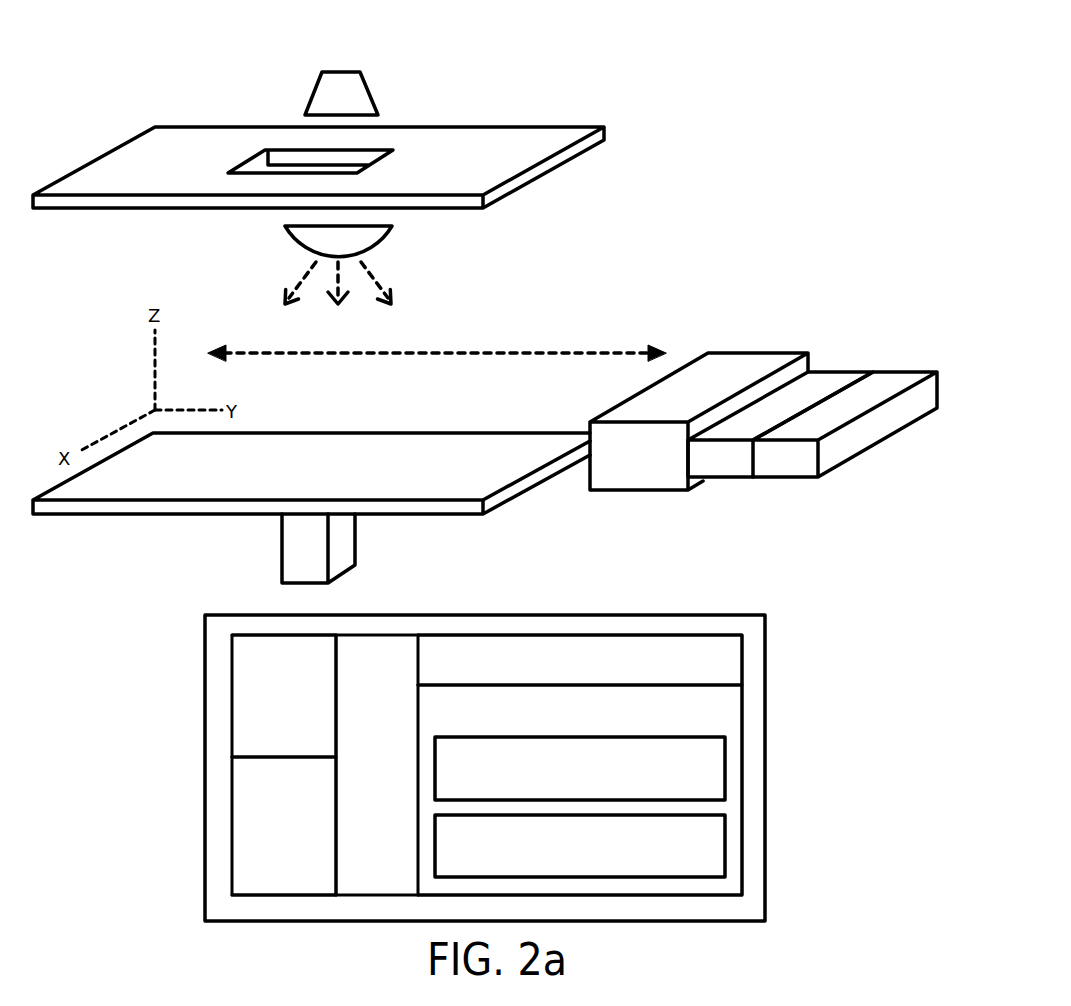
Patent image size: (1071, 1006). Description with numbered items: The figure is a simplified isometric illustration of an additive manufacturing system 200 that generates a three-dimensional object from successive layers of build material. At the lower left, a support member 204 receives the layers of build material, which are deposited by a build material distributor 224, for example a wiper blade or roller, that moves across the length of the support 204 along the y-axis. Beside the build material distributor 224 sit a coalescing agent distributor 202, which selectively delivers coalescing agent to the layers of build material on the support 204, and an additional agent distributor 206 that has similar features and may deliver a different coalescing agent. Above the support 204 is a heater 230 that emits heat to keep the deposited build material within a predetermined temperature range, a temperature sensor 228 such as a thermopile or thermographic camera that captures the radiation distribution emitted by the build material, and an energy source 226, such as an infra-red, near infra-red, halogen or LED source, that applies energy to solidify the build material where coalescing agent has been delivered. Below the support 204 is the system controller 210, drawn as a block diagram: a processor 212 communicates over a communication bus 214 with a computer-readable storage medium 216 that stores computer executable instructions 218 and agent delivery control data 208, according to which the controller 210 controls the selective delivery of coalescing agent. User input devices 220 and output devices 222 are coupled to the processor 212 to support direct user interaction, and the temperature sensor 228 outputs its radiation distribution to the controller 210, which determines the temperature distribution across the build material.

The additive manufacturing system 200 is at (768, 52).
The coalescing agent distributor 202 is at (880, 370).
The support member 204 is at (438, 433).
The agent distributor 206 is at (815, 370).
The agent delivery control data 208 is at (672, 872).
The system controller 210 is at (205, 908).
The processor 212 is at (650, 674).
The communication bus 214 is at (358, 794).
The computer-readable storage medium 216 is at (745, 762).
The computer executable instructions 218 is at (661, 781).
The user input devices 220 is at (265, 854).
The output devices 222 is at (265, 724).
The build material distributor 224 is at (718, 350).
The energy source 226 is at (390, 232).
The temperature sensor 228 is at (355, 70).
The heater 230 is at (515, 127).